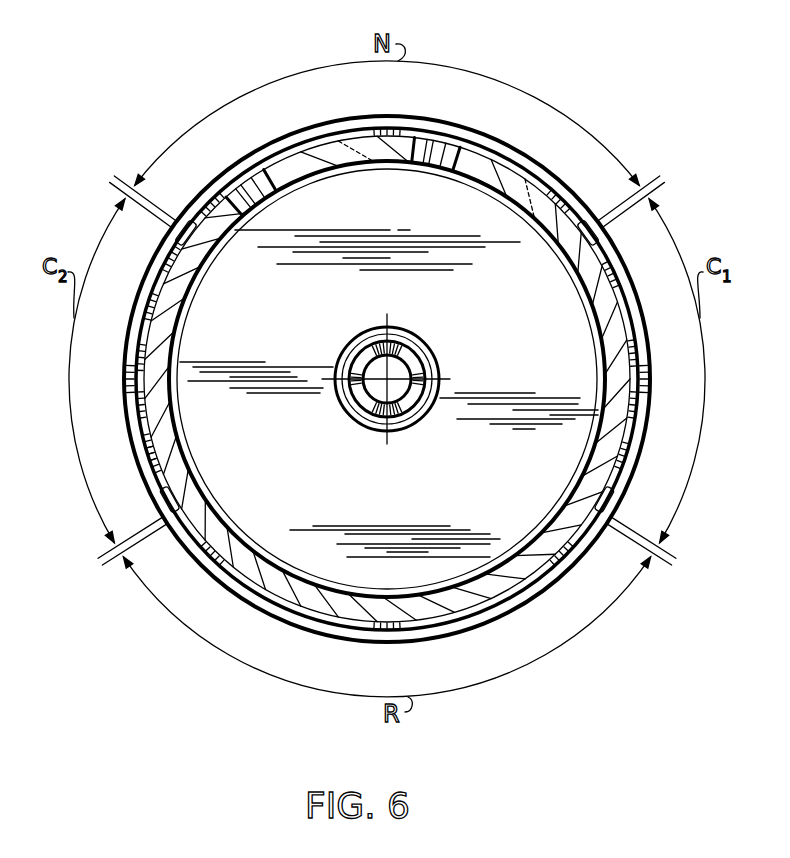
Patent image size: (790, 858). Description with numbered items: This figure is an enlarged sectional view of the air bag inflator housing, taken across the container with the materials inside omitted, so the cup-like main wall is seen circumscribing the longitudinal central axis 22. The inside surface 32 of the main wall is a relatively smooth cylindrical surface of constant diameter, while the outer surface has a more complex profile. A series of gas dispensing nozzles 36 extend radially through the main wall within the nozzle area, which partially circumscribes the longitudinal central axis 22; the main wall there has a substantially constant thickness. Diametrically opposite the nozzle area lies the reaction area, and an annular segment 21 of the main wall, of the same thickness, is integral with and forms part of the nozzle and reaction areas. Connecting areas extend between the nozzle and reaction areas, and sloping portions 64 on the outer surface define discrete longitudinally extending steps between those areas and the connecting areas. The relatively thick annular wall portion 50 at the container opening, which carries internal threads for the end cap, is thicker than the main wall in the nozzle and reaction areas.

The annular segment 21 is at (178, 312).
The longitudinal central axis 22 is at (427, 346).
The inside surface 32 is at (562, 500).
The gas dispensing nozzles 36 is at (436, 150).
The thick annular wall portion 50 is at (294, 134).
The sloping portions 64 is at (178, 238).